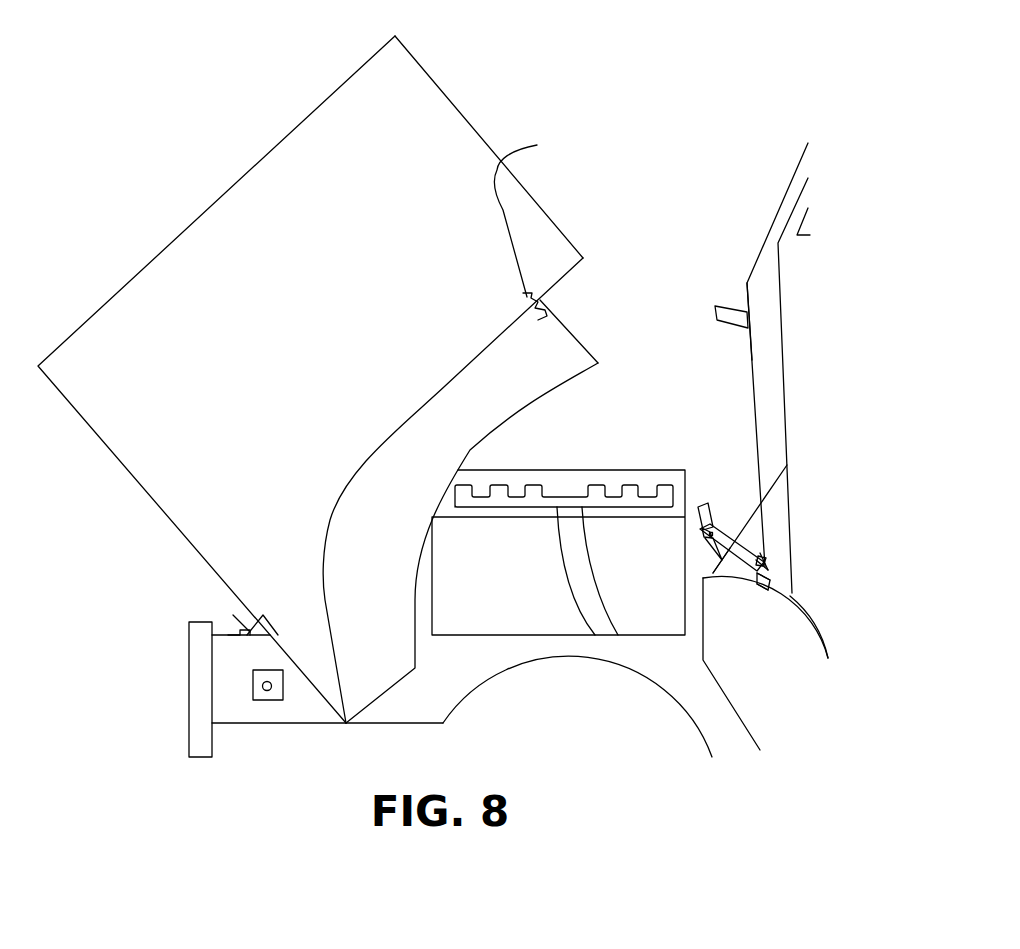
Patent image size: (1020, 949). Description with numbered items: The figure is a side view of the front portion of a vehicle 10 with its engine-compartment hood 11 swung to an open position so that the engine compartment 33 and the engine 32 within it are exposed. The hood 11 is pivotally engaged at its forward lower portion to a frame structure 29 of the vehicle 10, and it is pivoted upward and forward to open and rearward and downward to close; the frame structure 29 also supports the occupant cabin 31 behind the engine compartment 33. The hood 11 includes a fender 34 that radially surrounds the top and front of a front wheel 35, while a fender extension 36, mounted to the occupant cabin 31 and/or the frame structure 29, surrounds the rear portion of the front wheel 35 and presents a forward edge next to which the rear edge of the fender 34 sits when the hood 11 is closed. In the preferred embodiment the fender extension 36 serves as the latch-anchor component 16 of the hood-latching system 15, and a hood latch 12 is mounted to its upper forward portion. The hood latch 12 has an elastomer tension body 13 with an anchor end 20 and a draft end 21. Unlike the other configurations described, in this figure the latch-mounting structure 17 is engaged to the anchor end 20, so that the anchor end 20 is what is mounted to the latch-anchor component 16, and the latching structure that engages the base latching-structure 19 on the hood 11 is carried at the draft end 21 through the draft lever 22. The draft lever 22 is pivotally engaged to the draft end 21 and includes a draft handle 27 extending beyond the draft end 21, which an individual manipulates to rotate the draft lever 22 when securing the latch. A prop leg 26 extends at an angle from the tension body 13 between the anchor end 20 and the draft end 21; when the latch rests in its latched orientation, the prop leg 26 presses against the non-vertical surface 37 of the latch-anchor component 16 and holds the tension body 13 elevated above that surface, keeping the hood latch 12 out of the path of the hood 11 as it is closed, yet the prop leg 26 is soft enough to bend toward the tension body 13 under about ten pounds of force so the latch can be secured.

The vehicle 10 is at (793, 180).
The engine-compartment hood 11 is at (295, 197).
The hood latch 12 is at (758, 560).
The tension body 13 is at (764, 560).
The hood-latching system 15 is at (540, 293).
The latch-anchor component 16 is at (797, 632).
The latch-mounting structure 17 is at (782, 588).
The base latching-structure 19 is at (537, 214).
The anchor end 20 is at (782, 576).
The draft end 21 is at (732, 543).
The draft lever 22 is at (708, 533).
The prop leg 26 is at (717, 570).
The draft handle 27 is at (705, 505).
The frame structure 29 is at (192, 644).
The occupant cabin 31 is at (767, 293).
The engine 32 is at (480, 568).
The engine compartment 33 is at (692, 358).
The fender 34 is at (207, 320).
The front wheel 35 is at (570, 705).
The fender extension 36 is at (807, 657).
The non-vertical surface 37 is at (773, 668).